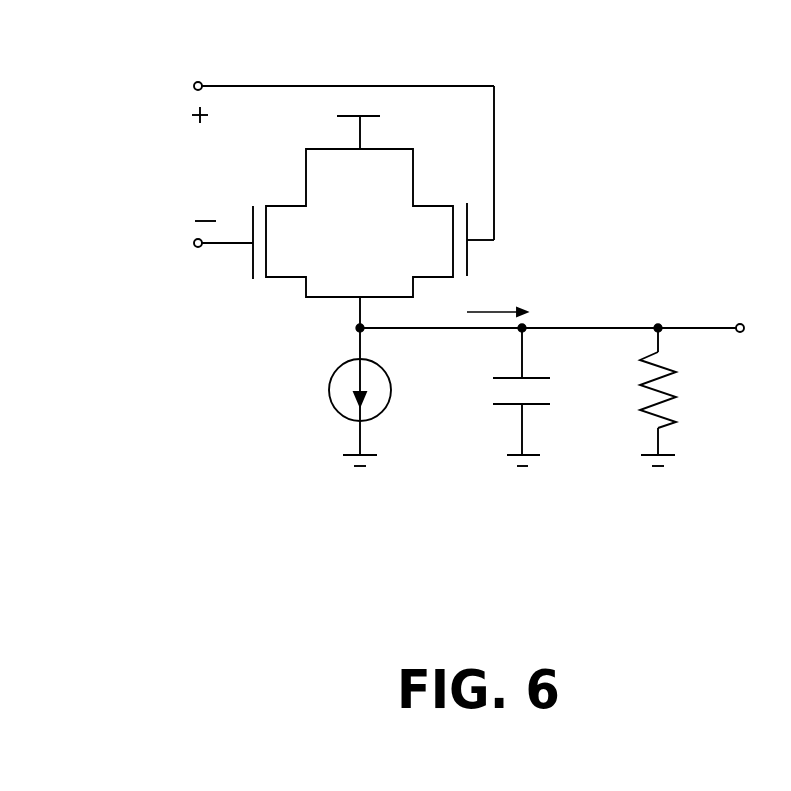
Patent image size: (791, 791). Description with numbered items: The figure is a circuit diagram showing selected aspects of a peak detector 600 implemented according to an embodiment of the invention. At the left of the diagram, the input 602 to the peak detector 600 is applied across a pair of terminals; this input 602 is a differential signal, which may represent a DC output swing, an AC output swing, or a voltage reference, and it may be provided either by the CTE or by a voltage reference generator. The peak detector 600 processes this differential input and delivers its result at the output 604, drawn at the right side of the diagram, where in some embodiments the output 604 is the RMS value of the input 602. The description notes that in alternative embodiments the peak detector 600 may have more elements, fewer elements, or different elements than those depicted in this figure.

The peak detector 600 is at (407, 574).
The input 602 is at (178, 165).
The output 604 is at (746, 277).